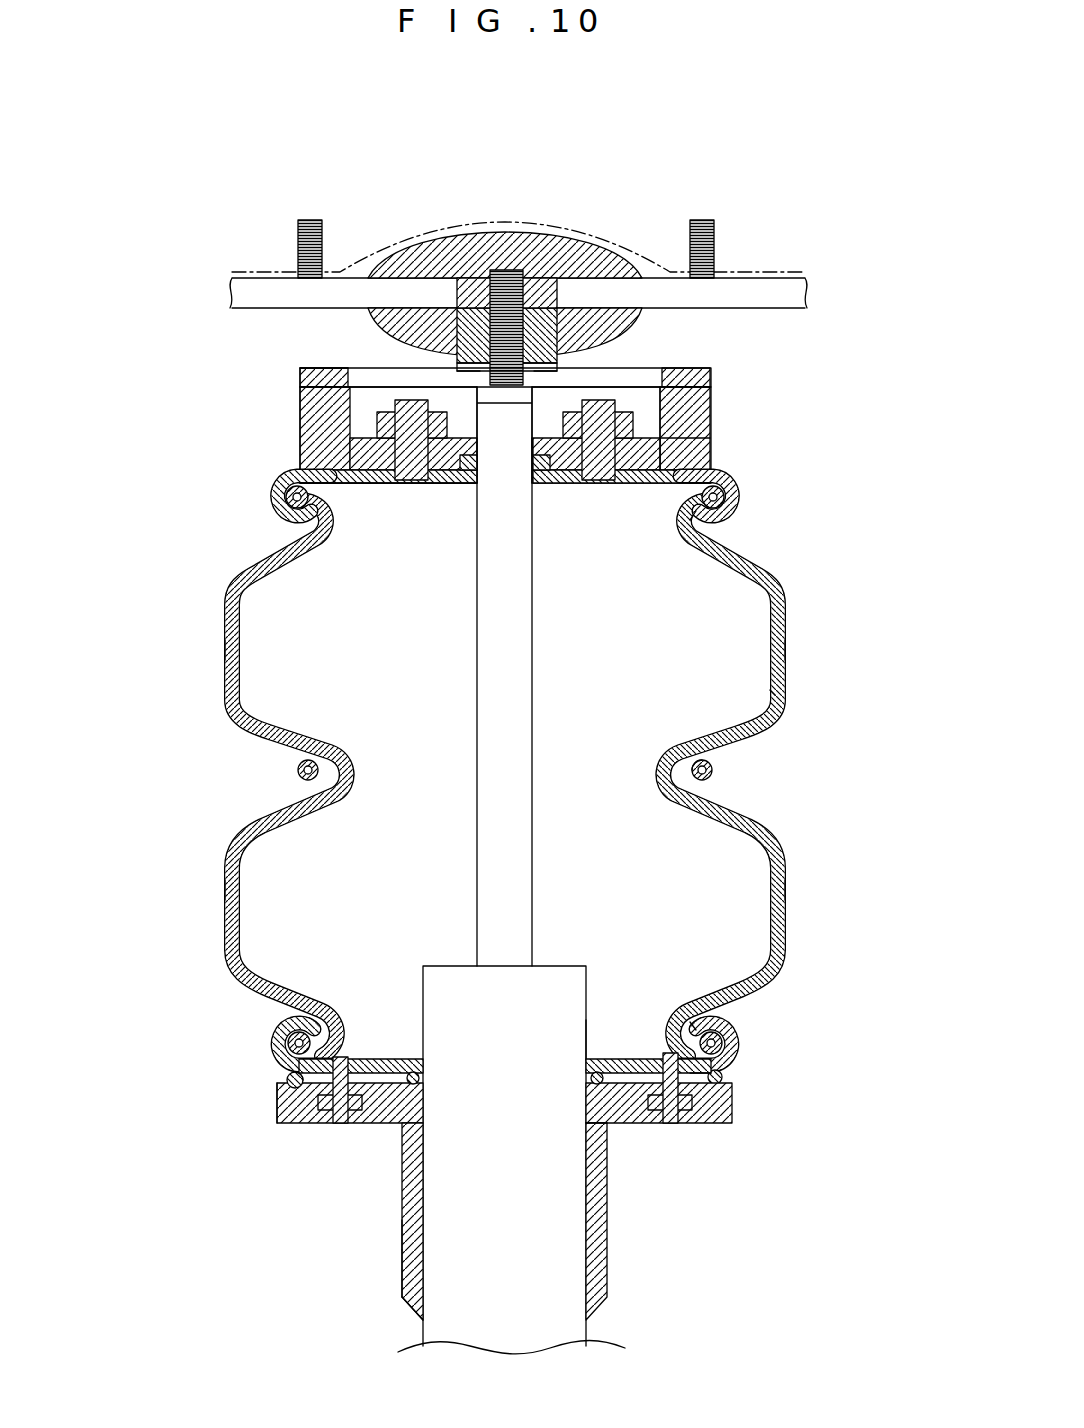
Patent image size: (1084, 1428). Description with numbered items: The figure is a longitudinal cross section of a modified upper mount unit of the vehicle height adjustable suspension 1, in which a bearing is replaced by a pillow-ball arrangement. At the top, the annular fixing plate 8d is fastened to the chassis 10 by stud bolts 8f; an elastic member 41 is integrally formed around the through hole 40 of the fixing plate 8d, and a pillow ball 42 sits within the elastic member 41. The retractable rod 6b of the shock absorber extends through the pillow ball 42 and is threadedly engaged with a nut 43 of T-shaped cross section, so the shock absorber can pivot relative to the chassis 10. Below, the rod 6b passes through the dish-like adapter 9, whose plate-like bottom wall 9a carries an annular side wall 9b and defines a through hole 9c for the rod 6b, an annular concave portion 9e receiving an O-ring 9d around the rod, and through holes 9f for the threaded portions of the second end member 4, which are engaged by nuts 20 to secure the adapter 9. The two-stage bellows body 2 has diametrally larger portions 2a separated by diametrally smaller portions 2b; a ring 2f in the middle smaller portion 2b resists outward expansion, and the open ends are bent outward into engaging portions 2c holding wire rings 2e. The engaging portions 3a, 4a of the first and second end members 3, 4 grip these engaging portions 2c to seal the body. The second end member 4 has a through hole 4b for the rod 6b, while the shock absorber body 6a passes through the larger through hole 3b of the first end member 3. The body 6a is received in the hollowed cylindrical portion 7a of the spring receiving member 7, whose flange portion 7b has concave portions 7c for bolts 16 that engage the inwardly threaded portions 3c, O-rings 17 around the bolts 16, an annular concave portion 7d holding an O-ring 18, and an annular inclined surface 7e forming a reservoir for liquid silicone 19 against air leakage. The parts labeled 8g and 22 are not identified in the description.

The vehicle height adjustable suspension 1 is at (776, 752).
The bellows body 2 is at (276, 736).
The diametrally larger portions 2a is at (792, 622).
The diametrally smaller portions 2b is at (735, 533).
The engaging portions 2c is at (676, 488).
The wire rings 2e is at (721, 500).
The ring 2f is at (700, 769).
The first end member 3 is at (719, 1066).
The engaging portion 3a is at (722, 1032).
The through hole 3b is at (590, 1042).
The inwardly threaded portions 3c is at (700, 1084).
The second end member 4 is at (736, 504).
The engaging portion 4a is at (700, 521).
The through hole 4b is at (420, 533).
The shock absorber body 6a is at (521, 1262).
The retractable rod 6b is at (500, 870).
The spring receiving member 7 is at (611, 1209).
The hollowed cylindrical portion 7a is at (412, 1262).
The flange portion 7b is at (282, 1124).
The concave portions 7c is at (640, 1126).
The annular concave portion 7d is at (291, 1113).
The annular inclined surface 7e is at (607, 1129).
The fixing plate 8d is at (768, 278).
The stud bolts 8f is at (310, 220).
The washer 8g is at (518, 364).
The adapter 9 is at (290, 433).
The bottom wall 9a is at (680, 468).
The annular side wall 9b is at (378, 388).
The through hole 9c is at (542, 495).
The O-ring 9d is at (546, 490).
The annular concave portion 9e is at (456, 497).
The through holes 9f is at (452, 470).
The chassis 10 is at (518, 203).
The bolts 16 is at (339, 1124).
The O-rings 17 is at (676, 1113).
The O-ring 18 is at (288, 1072).
The liquid silicone 19 is at (412, 1239).
The nuts 20 is at (382, 430).
The chamfer 22 is at (418, 1303).
The through hole 40 is at (466, 268).
The elastic member 41 is at (405, 330).
The pillow ball 42 is at (578, 326).
The nut 43 is at (549, 290).